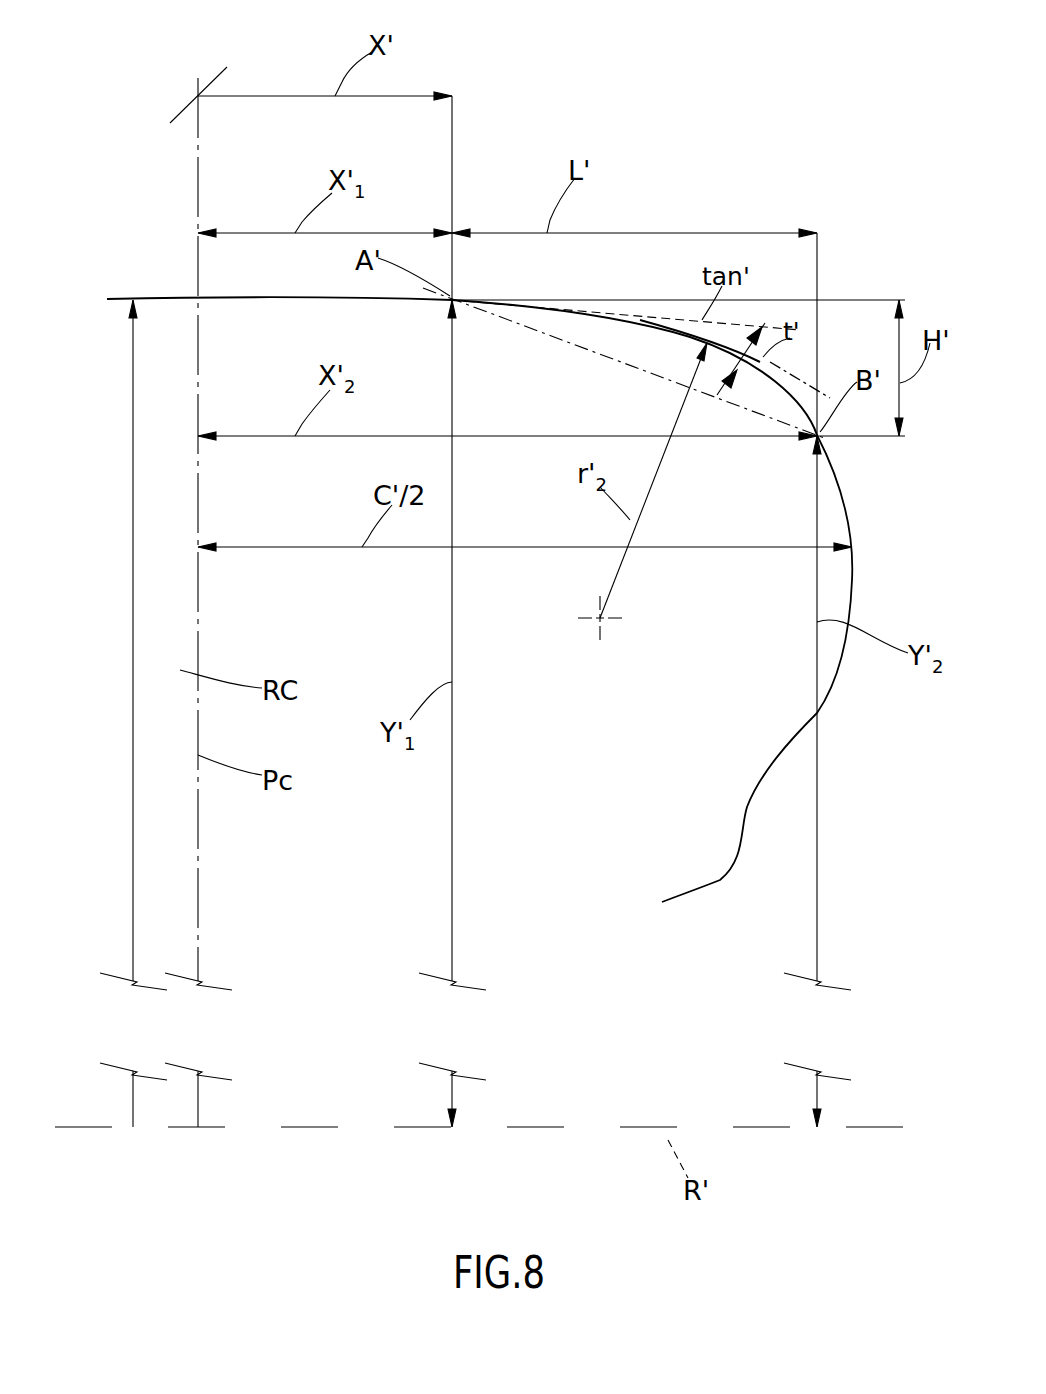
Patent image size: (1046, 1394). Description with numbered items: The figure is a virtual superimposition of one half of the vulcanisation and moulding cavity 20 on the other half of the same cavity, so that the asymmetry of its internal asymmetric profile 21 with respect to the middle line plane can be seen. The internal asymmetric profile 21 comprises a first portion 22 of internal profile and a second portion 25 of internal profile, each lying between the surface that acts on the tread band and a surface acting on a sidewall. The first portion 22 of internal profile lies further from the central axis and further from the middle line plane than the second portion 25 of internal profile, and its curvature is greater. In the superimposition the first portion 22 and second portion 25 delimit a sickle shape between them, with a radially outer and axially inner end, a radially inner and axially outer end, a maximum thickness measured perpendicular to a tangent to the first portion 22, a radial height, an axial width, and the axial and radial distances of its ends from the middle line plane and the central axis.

The vulcanisation and moulding cavity 20 is at (479, 535).
The internal asymmetric profile 21 is at (687, 230).
The first portion of internal profile 22 is at (797, 378).
The second portion of internal profile 25 is at (700, 330).